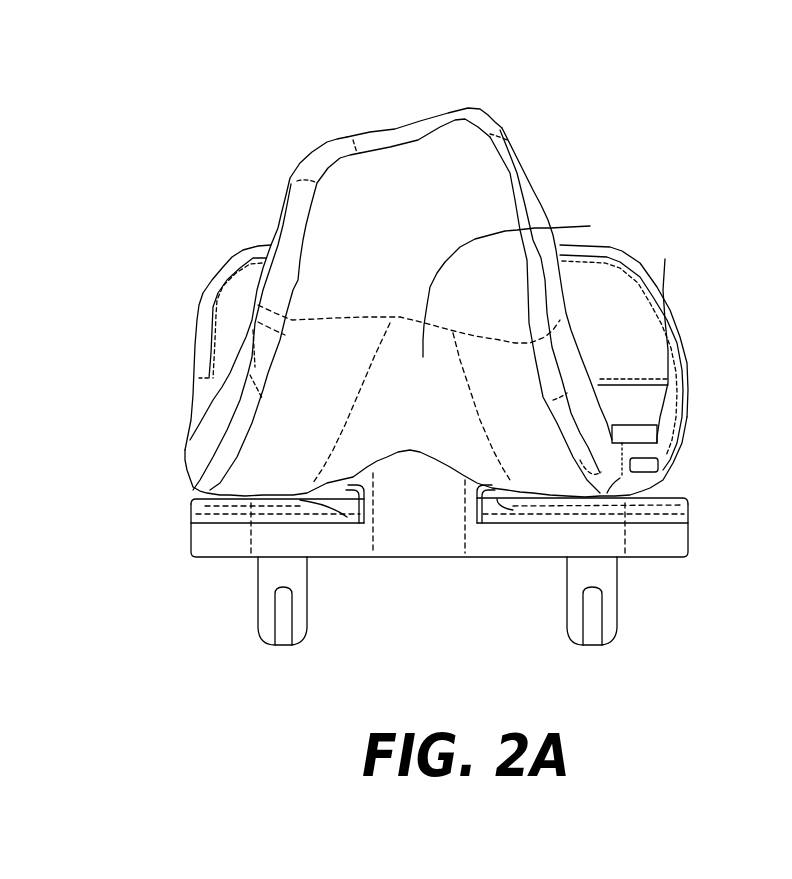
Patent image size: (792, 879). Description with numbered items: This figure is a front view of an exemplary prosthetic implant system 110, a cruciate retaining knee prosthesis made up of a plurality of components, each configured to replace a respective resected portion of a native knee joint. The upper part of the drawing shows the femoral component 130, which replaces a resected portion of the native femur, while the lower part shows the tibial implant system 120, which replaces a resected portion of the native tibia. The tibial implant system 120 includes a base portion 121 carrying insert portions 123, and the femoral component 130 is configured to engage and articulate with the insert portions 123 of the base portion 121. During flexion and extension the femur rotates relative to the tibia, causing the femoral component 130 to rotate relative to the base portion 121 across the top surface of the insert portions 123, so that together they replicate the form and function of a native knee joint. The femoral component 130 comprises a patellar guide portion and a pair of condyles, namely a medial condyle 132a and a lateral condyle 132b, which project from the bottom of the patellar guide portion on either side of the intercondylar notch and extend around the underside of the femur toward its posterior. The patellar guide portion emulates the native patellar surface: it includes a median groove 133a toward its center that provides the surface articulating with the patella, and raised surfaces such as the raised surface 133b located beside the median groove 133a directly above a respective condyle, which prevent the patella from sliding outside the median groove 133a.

The prosthetic implant system 110 is at (236, 126).
The femoral component 130 is at (497, 128).
The medial condyle 132a is at (238, 263).
The lateral condyle 132b is at (663, 316).
The median groove 133a is at (283, 433).
The raised surface 133b is at (542, 460).
The tibial implant system 120 is at (212, 593).
The base portion 121 is at (421, 540).
The insert portions 123 is at (203, 512).